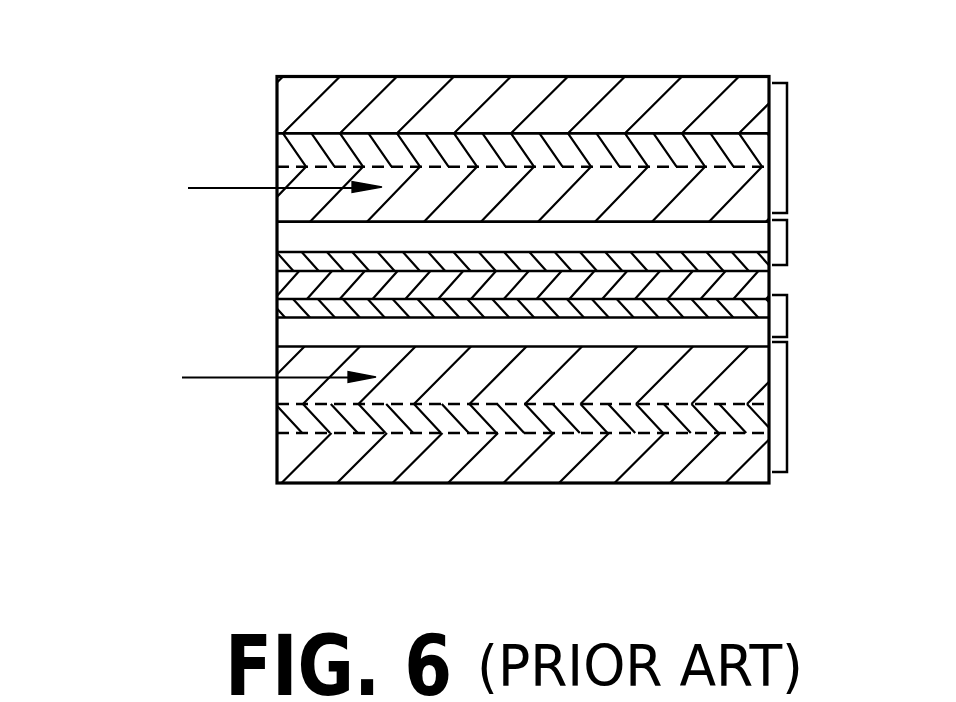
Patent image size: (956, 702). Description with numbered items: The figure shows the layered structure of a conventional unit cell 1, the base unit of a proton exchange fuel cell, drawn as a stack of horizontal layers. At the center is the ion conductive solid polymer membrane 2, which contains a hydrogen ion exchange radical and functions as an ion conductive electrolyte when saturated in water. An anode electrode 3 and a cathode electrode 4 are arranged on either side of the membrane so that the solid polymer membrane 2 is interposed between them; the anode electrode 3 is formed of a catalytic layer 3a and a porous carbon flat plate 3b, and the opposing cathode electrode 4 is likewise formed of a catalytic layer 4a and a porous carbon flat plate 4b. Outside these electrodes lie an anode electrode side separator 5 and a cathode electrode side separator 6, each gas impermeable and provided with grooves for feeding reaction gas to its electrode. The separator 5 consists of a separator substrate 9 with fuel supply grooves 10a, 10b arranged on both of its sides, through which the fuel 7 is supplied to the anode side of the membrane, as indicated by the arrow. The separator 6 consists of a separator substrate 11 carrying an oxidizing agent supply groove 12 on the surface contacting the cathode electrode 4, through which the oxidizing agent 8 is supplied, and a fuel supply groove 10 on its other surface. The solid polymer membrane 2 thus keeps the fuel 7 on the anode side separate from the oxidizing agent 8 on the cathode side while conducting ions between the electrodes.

The unit cell 1 is at (437, 57).
The ion conductive solid polymer membrane 2 is at (742, 282).
The anode electrode 3 is at (504, 241).
The catalytic layer 3a is at (303, 265).
The porous carbon flat plate 3b is at (277, 231).
The cathode electrode 4 is at (531, 312).
The catalytic layer 4a is at (293, 308).
The porous carbon flat plate 4b is at (293, 332).
The anode electrode side separator 5 is at (460, 128).
The cathode electrode side separator 6 is at (446, 417).
The fuel 7 is at (225, 193).
The oxidizing agent 8 is at (208, 357).
The separator substrate 9 is at (277, 137).
The fuel supply groove 10 is at (312, 449).
The fuel supply groove 10a is at (277, 177).
The fuel supply groove 10b is at (278, 108).
The separator substrate 11 is at (302, 423).
The oxidizing agent supply groove 12 is at (293, 387).